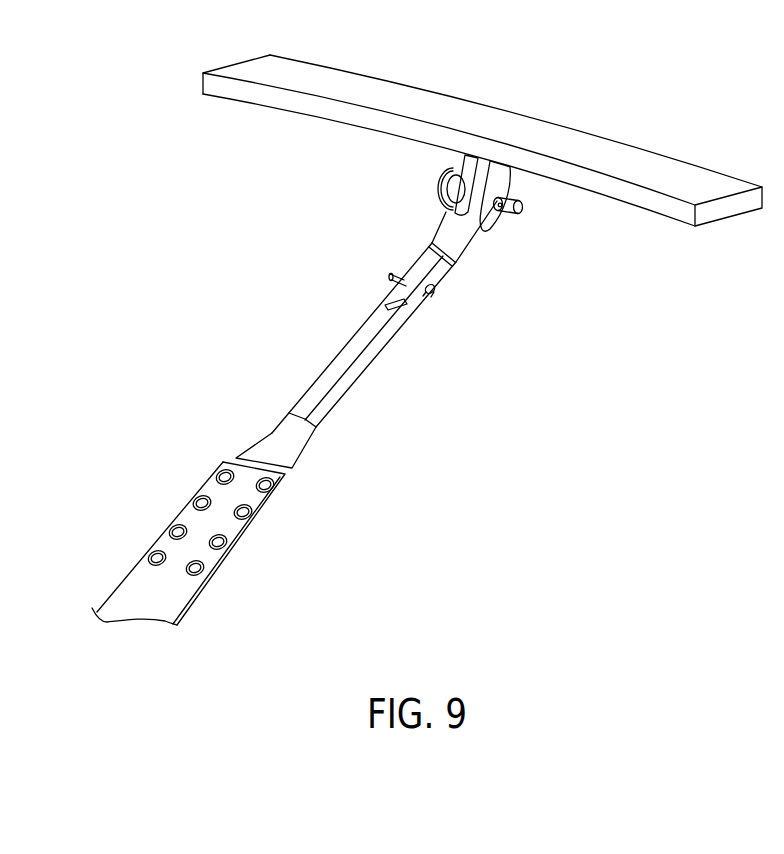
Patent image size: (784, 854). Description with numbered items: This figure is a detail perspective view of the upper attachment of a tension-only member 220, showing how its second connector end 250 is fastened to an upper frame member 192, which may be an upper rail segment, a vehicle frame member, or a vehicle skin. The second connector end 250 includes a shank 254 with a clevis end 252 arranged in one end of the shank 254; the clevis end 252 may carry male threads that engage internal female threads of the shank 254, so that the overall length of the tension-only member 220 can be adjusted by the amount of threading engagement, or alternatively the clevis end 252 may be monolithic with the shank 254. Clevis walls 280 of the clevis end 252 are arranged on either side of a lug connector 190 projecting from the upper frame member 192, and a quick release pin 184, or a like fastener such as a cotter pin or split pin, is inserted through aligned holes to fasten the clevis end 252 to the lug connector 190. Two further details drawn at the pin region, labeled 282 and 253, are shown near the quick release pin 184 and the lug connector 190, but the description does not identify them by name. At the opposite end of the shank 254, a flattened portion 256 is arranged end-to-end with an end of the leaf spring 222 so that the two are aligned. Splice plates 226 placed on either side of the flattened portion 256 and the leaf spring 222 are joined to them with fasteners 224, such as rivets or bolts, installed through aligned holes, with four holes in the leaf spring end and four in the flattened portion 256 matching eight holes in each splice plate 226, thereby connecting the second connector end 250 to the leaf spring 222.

The quick release pin 184 is at (453, 190).
The lug connector 190 is at (555, 174).
The upper frame member 192 is at (623, 157).
The tension-only member 220 is at (254, 539).
The leaf spring 222 is at (165, 600).
The fasteners 224 is at (236, 505).
The splice plates 226 is at (225, 525).
The second connector end 250 is at (360, 359).
The clevis end 252 is at (515, 192).
The retaining clip 253 is at (502, 210).
The shank 254 is at (367, 363).
The flattened portion 256 is at (300, 457).
The clevis walls 280 is at (458, 210).
The pivot pin 282 is at (523, 201).